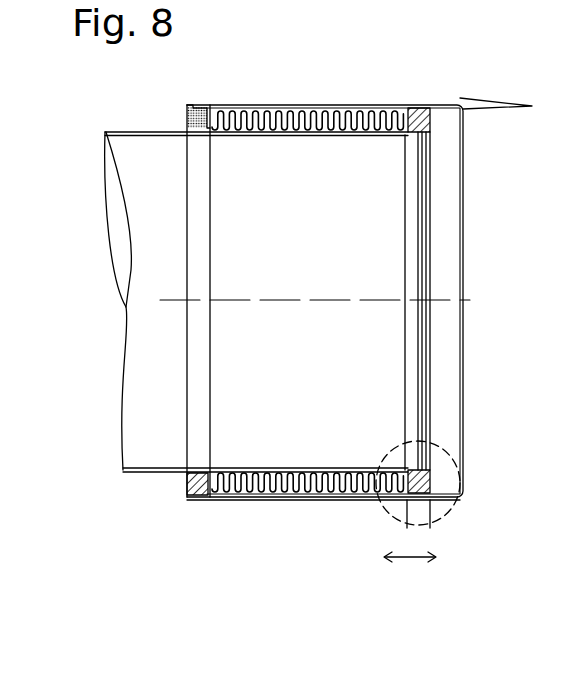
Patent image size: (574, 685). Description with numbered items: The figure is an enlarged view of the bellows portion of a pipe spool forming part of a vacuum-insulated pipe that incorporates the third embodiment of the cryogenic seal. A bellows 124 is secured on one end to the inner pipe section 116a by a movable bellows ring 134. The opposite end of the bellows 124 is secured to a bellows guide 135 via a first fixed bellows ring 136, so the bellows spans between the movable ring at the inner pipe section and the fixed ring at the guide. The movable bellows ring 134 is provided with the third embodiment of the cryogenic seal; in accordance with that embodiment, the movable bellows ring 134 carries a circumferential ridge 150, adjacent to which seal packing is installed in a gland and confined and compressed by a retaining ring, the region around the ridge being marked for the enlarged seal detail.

The inner pipe section 116a is at (150, 473).
The bellows 124 is at (242, 133).
The movable bellows ring 134 is at (404, 189).
The bellows guide 135 is at (238, 500).
The first fixed bellows ring 136 is at (183, 331).
The circumferential ridge 150 is at (410, 491).